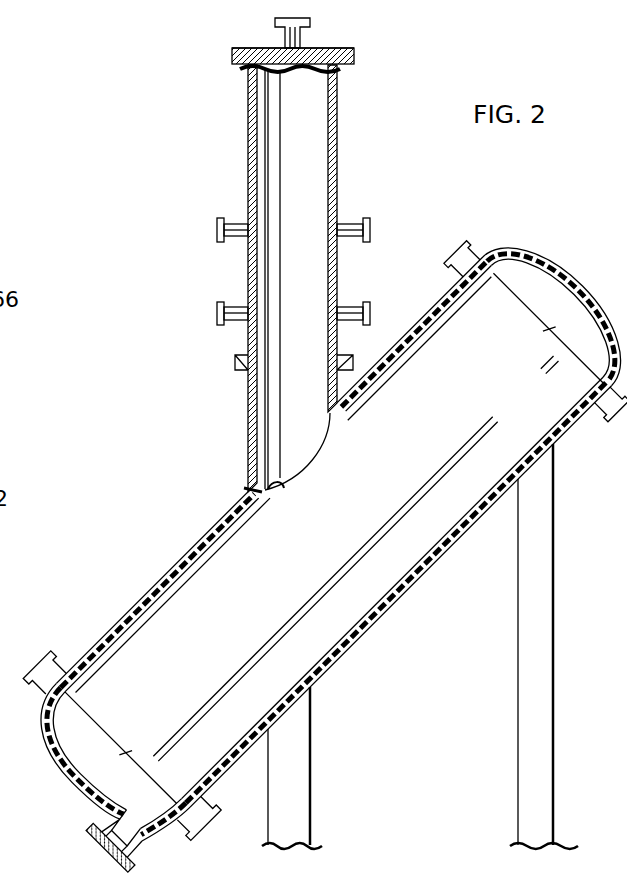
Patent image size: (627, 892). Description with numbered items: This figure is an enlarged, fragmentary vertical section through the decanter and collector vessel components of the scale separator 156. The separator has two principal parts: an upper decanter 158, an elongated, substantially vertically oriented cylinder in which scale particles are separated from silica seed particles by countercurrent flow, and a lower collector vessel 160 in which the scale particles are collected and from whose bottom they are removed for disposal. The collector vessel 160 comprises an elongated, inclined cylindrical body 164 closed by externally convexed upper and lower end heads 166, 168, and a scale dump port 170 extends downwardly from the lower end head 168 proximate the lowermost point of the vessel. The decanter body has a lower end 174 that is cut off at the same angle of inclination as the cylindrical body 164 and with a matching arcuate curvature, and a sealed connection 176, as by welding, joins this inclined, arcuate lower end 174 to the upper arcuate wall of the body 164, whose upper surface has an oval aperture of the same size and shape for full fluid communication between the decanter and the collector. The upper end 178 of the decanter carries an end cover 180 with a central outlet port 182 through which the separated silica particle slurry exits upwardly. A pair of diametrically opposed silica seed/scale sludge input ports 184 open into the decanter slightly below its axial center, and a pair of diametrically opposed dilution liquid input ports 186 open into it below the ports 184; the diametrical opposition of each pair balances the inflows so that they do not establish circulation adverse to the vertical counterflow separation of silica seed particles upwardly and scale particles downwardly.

The scale separator 156 is at (420, 294).
The decanter 158 is at (240, 261).
The collector vessel 160 is at (200, 534).
The cylindrical body 164 is at (374, 623).
The upper end head 166 is at (582, 293).
The lower end head 168 is at (77, 791).
The scale dump port 170 is at (133, 847).
The lower end 174 is at (242, 488).
The sealed connection 176 is at (283, 484).
The upper end 178 is at (232, 68).
The end cover 180 is at (328, 50).
The central outlet port 182 is at (283, 41).
The silica seed/scale sludge input ports 184 is at (240, 220).
The dilution liquid input ports 186 is at (240, 307).